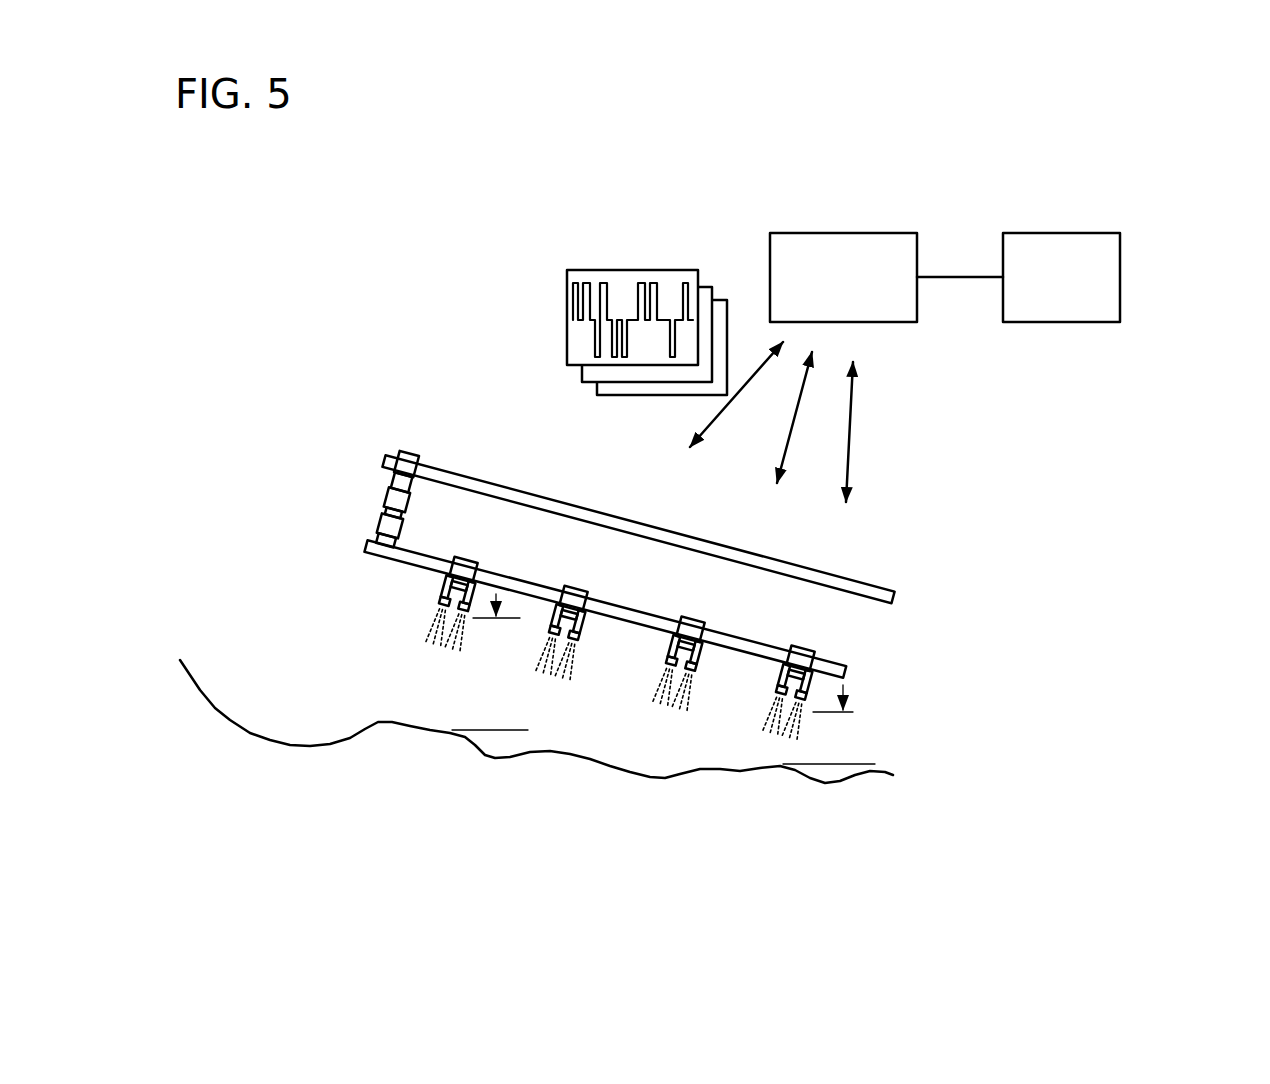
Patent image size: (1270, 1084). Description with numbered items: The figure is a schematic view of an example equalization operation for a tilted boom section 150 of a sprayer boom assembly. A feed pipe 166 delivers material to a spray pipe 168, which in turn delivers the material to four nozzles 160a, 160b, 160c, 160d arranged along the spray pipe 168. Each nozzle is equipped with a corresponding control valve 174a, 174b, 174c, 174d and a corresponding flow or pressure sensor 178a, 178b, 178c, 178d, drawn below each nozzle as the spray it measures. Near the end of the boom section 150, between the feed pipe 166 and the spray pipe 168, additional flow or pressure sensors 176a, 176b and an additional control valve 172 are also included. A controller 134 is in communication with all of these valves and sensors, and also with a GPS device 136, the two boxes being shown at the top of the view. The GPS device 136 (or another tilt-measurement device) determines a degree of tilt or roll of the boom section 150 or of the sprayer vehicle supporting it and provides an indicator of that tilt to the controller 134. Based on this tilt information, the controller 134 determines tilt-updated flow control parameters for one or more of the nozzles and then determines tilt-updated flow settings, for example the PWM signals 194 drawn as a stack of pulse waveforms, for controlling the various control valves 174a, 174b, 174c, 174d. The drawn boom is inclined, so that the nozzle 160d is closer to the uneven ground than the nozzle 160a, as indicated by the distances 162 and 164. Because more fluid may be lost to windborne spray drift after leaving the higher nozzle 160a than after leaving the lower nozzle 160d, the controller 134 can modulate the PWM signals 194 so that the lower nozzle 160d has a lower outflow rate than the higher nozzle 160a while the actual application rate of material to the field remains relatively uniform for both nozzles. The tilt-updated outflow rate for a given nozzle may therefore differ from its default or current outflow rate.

The controller 134 is at (828, 233).
The GPS device 136 is at (1091, 322).
The boom section 150 is at (997, 549).
The nozzle 160a is at (376, 460).
The nozzle 160b is at (573, 589).
The nozzle 160c is at (662, 674).
The nozzle 160d is at (880, 758).
The distance 162 is at (843, 766).
The distance 164 is at (496, 732).
The feed pipe 166 is at (829, 571).
The spray pipe 168 is at (363, 551).
The control valve 172 is at (311, 431).
The control valve 174a is at (462, 560).
The control valve 174b is at (580, 590).
The control valve 174c is at (698, 625).
The control valve 174d is at (807, 653).
The flow or pressure sensor 176a is at (405, 452).
The flow or pressure sensor 176b is at (407, 495).
The flow or pressure sensor 178a is at (440, 603).
The flow or pressure sensor 178b is at (607, 650).
The flow or pressure sensor 178c is at (707, 668).
The flow or pressure sensor 178d is at (760, 680).
The PWM signals 194 is at (625, 270).